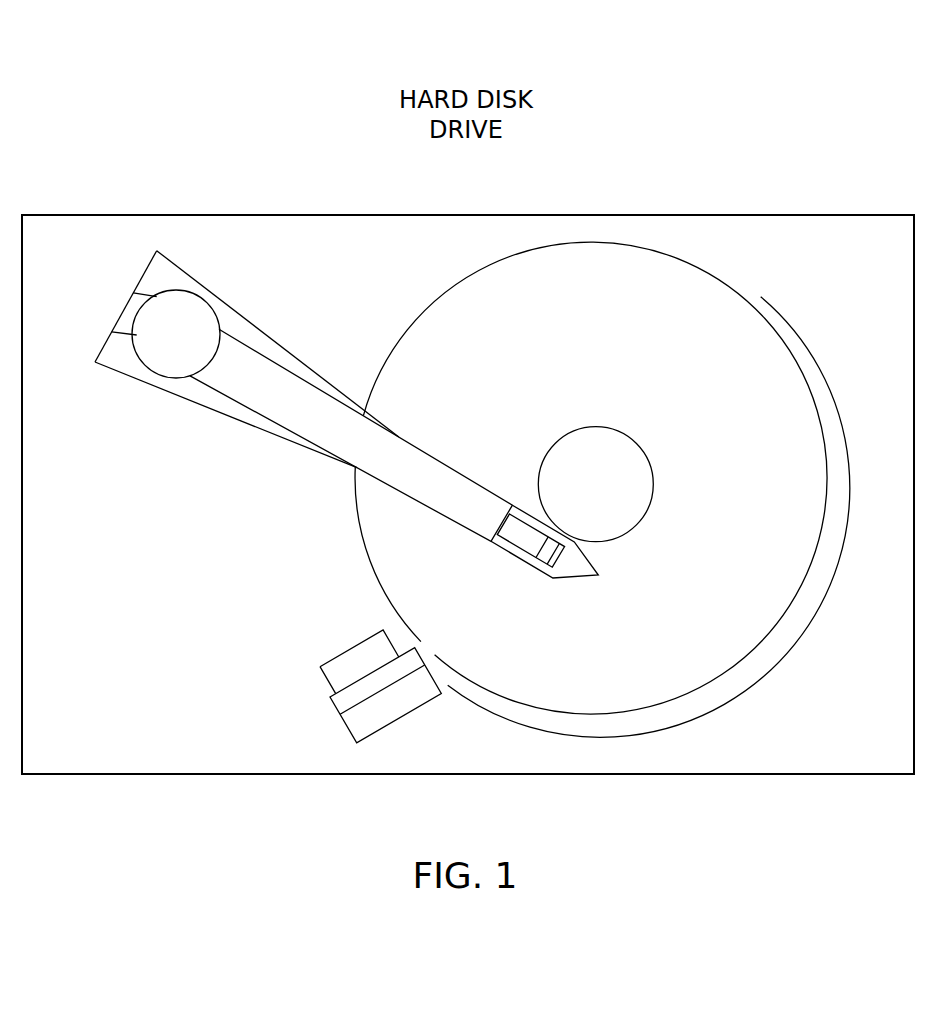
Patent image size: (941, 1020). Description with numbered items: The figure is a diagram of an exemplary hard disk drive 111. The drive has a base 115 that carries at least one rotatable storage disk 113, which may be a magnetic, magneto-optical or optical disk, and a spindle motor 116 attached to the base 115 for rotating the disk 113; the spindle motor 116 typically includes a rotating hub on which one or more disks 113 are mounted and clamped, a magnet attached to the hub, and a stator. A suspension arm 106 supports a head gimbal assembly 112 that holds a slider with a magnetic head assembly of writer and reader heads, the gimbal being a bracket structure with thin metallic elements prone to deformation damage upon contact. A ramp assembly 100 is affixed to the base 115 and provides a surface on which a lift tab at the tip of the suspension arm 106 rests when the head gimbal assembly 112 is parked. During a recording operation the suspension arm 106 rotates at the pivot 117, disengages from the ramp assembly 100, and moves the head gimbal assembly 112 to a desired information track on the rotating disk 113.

The hard disk drive 111 is at (466, 214).
The base 115 is at (97, 757).
The rotatable storage disk 113 is at (418, 322).
The spindle motor 116 is at (642, 477).
The suspension arm 106 is at (313, 433).
The pivot 117 is at (170, 368).
The head gimbal assembly 112 is at (545, 570).
The ramp assembly 100 is at (333, 705).